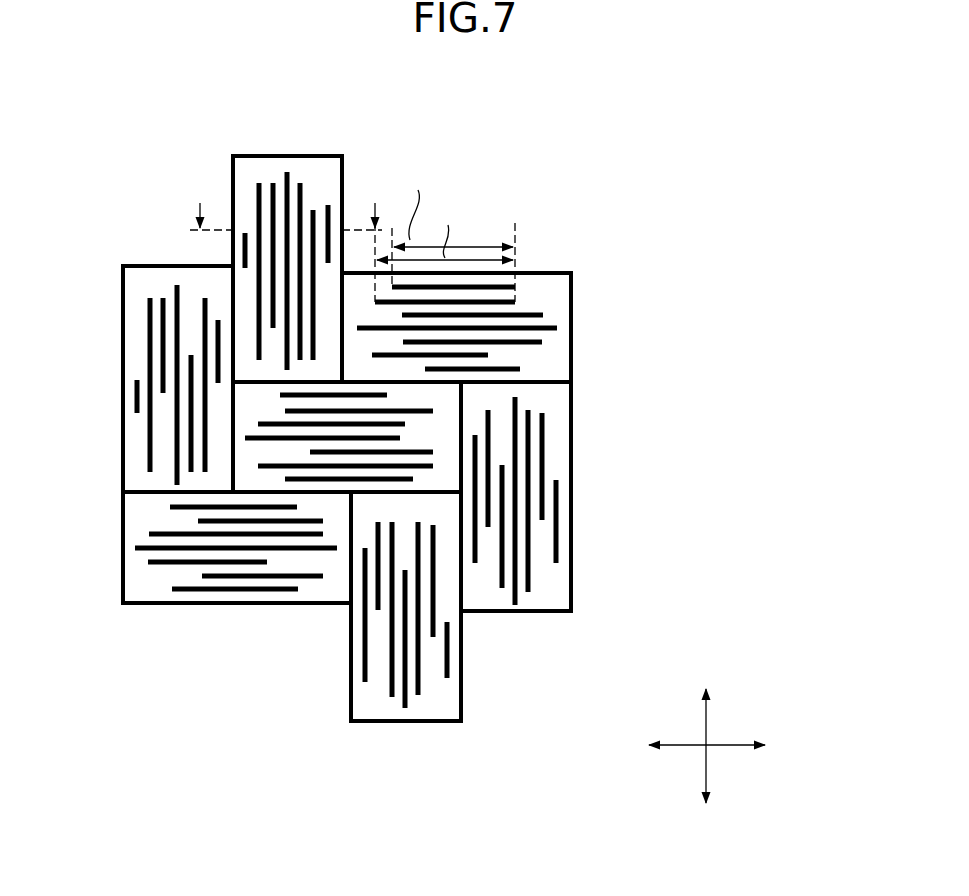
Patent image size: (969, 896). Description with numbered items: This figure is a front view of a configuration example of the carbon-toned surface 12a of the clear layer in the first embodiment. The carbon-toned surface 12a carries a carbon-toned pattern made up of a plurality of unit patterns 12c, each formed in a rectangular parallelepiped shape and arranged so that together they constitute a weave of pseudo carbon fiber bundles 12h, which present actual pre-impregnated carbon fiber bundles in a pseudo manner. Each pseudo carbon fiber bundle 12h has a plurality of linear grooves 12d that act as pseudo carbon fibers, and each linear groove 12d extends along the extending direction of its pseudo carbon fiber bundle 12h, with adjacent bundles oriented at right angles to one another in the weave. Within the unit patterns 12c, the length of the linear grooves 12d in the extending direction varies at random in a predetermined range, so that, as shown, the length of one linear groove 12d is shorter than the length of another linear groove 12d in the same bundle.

The carbon-toned surface 12a is at (490, 129).
The unit pattern 12c is at (343, 176).
The linear groove 12d is at (328, 205).
The pseudo carbon fiber bundle 12h is at (334, 153).